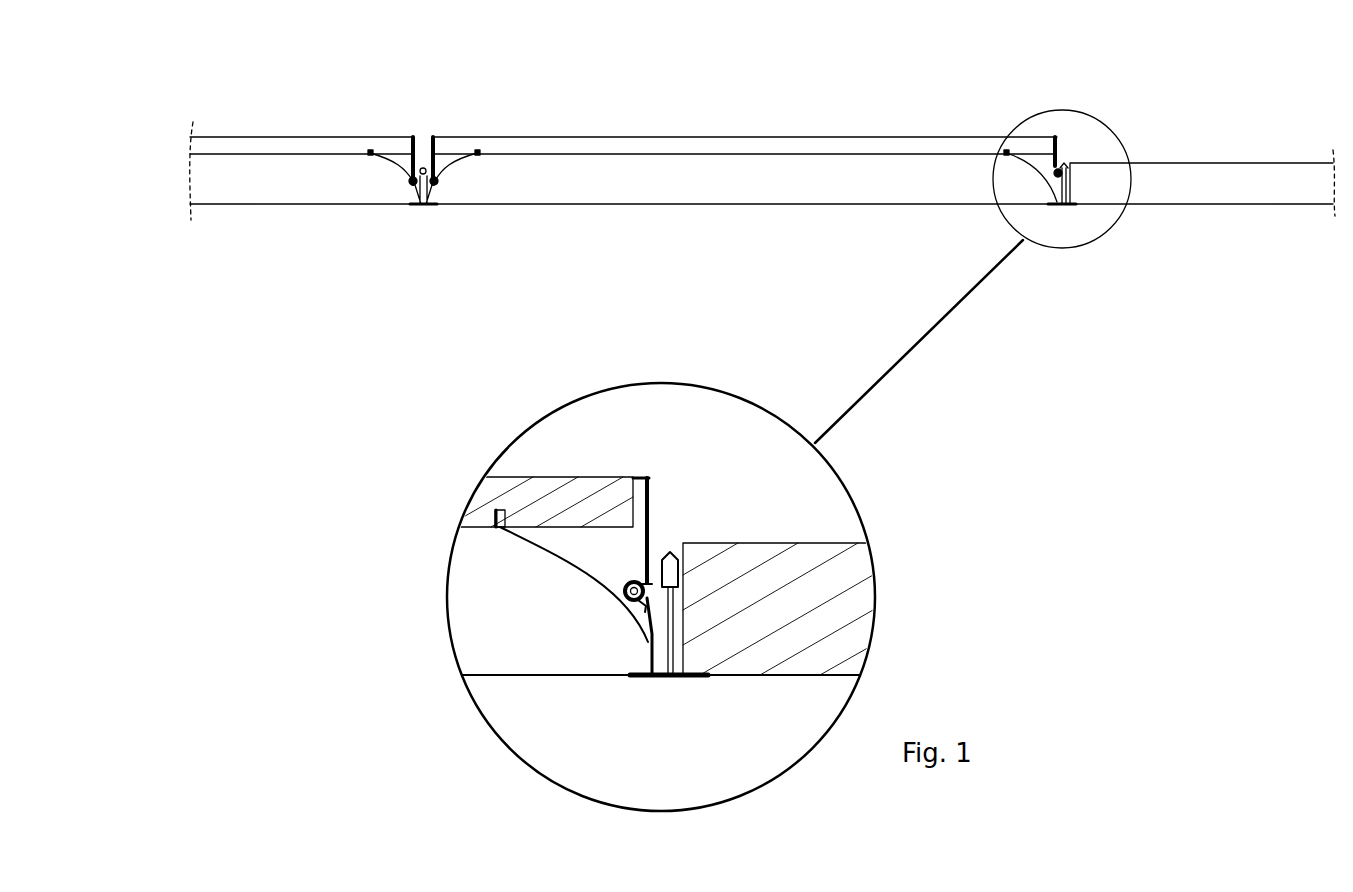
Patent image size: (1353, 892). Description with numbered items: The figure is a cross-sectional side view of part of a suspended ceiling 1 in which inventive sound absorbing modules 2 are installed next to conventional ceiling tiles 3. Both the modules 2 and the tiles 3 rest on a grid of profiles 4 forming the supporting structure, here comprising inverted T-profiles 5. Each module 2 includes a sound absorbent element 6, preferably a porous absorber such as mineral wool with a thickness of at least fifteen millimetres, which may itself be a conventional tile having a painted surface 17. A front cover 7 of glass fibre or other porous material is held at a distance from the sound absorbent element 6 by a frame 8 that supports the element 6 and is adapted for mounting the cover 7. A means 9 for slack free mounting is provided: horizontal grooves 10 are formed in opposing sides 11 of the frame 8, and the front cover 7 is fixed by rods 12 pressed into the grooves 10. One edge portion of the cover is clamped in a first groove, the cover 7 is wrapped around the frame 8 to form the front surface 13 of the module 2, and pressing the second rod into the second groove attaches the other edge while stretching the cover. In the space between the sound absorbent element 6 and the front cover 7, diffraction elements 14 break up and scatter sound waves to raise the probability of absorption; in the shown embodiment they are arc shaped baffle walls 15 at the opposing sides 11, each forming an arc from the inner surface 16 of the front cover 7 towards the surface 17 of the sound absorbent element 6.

The suspended ceiling 1 is at (852, 88).
The sound absorbing module 2 is at (681, 126).
The ceiling tile 3 is at (1158, 180).
The grid of profiles 4 is at (1066, 157).
The inverted T-profile 5 is at (662, 630).
The sound absorbent element 6 is at (778, 150).
The front cover 7 is at (658, 206).
The frame 8 is at (423, 136).
The means for slack free mounting 9 is at (653, 577).
The horizontal groove 10 is at (632, 584).
The opposing side 11 is at (423, 209).
The rod 12 is at (622, 598).
The front surface 13 is at (800, 212).
The diffraction element 14 is at (463, 174).
The arc shaped baffle wall 15 is at (578, 568).
The inner surface 16 is at (625, 200).
The surface 17 is at (663, 158).